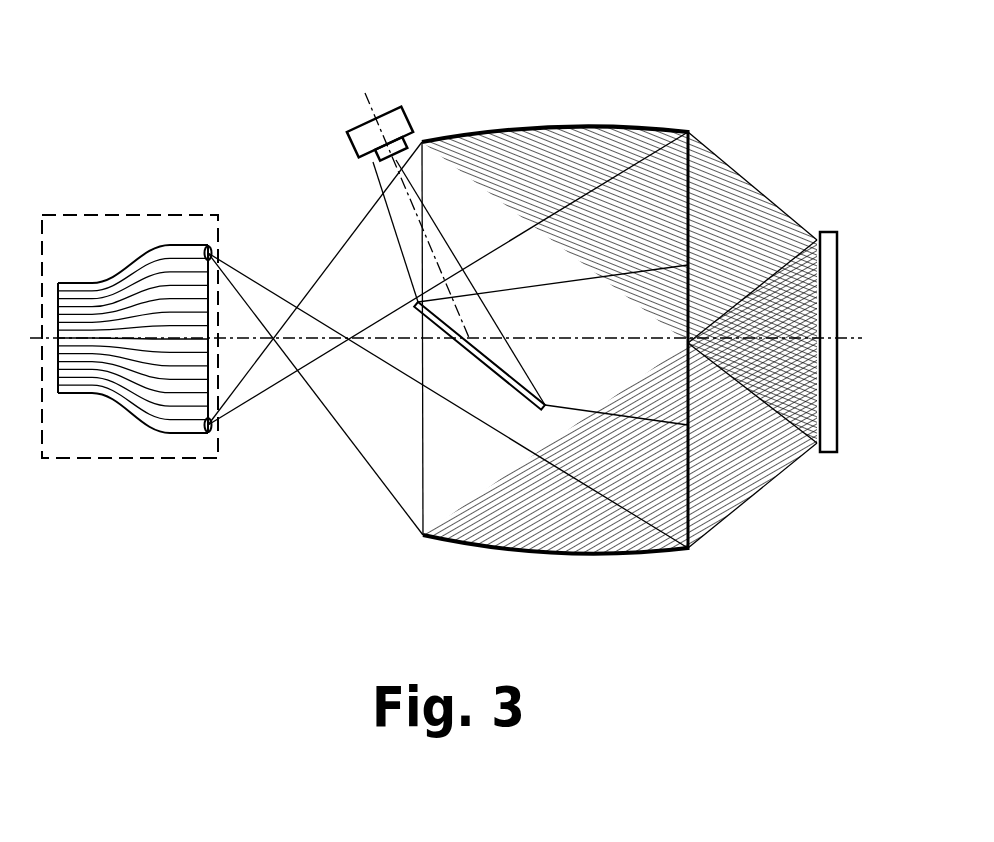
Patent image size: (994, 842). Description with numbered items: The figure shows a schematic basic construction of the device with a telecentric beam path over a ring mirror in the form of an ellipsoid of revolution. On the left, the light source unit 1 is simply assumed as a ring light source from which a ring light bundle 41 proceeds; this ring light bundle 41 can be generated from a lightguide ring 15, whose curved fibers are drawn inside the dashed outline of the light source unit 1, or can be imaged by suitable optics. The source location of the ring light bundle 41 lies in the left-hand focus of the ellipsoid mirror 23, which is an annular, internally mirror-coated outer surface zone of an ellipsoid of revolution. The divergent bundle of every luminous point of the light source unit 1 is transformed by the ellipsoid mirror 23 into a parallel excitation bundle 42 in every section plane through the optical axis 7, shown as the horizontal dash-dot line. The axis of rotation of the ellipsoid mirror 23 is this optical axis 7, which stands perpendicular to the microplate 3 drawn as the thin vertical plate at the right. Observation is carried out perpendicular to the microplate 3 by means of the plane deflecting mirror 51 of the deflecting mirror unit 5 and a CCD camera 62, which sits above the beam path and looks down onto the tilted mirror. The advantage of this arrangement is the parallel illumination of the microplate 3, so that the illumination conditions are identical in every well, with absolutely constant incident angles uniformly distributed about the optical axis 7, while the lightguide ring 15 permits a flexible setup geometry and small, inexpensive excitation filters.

The light source unit 1 is at (133, 213).
The lightguide ring 15 is at (107, 373).
The ring light bundle 41 is at (212, 259).
The CCD camera 62 is at (350, 128).
The plane deflecting mirror 51 is at (497, 372).
The ellipsoid mirror 23 is at (619, 338).
The deflecting mirror unit 5 is at (662, 268).
The parallel excitation bundle 42 is at (735, 490).
The microplate 3 is at (829, 232).
The optical axis 7 is at (853, 343).